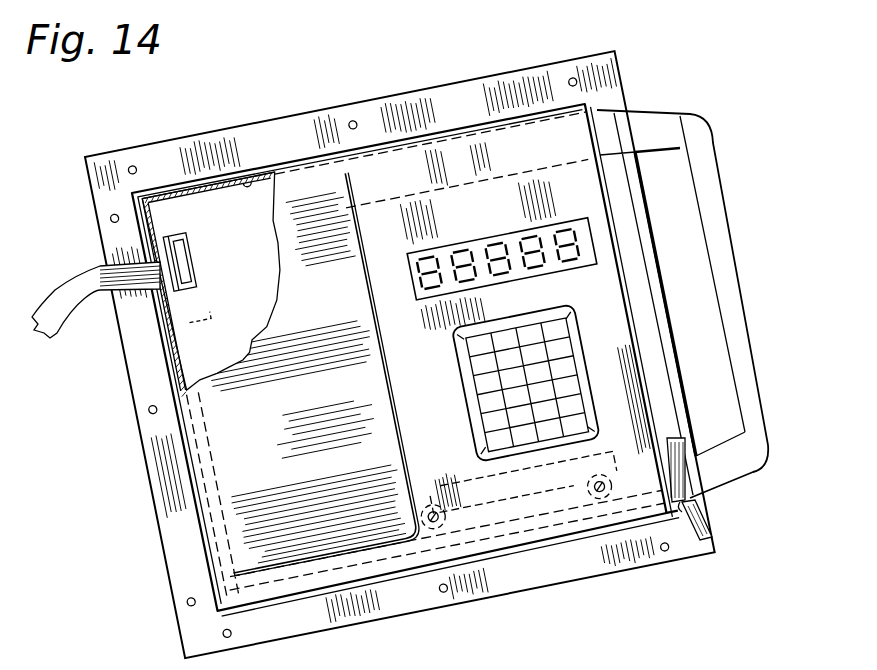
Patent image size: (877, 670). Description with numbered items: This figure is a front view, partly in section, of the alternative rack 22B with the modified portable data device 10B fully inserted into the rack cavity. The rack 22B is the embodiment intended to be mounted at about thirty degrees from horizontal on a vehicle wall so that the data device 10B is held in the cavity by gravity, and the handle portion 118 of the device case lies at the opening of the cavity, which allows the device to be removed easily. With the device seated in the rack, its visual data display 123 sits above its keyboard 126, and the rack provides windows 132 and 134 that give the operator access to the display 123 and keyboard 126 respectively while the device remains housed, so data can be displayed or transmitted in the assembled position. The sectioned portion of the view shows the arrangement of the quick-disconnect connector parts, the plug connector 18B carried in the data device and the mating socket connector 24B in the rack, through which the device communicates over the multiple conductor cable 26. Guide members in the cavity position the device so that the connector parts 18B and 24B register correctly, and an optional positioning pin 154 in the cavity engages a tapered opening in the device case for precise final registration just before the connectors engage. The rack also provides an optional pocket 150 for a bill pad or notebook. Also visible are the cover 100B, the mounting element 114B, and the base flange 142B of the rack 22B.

The portable data device 10B is at (668, 228).
The rack 22B is at (462, 85).
The quick-disconnect connector 24B is at (140, 247).
The quick-disconnect connector 18B is at (197, 256).
The multiple conductor cable 26 is at (55, 336).
The cover 100B is at (252, 180).
The positioning pin 154 is at (203, 323).
The pocket 150 is at (352, 432).
The window 132 is at (420, 251).
The visual data display 123 is at (531, 240).
The window 134 is at (463, 372).
The keyboard 126 is at (492, 402).
The mounting bracket 114B is at (519, 492).
The handle portion 118 is at (740, 317).
The raised frame 142B is at (602, 570).